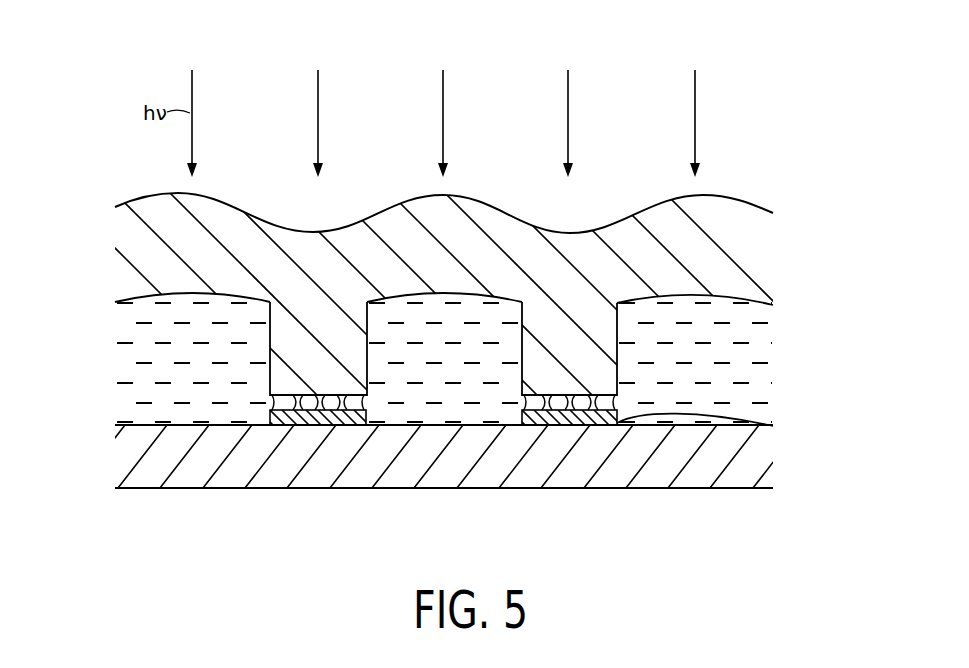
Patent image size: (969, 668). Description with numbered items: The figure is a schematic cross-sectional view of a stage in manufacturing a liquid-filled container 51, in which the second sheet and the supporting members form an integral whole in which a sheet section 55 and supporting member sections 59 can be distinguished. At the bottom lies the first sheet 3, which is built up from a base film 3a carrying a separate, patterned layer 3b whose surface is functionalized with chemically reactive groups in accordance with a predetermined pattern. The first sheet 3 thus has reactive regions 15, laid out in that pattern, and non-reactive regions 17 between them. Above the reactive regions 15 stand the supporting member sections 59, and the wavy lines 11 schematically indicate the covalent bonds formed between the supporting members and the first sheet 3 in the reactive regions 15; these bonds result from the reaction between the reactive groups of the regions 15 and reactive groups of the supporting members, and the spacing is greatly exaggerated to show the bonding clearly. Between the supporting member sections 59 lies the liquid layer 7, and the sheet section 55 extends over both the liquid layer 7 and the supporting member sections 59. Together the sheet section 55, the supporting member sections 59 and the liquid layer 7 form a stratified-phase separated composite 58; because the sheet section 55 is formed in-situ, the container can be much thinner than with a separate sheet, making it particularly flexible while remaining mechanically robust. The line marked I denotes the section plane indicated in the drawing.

The liquid-filled container 51 is at (80, 172).
The stratified-phase separated composite 58 is at (852, 213).
The sheet section 55 is at (763, 237).
The supporting member sections 59 is at (587, 308).
The liquid layer 7 is at (762, 323).
The wavy lines 11 is at (272, 402).
The reactive regions 15 is at (307, 425).
The non-reactive regions 17 is at (440, 428).
The first sheet 3 is at (850, 413).
The base film 3a is at (763, 478).
The patterned layer 3b is at (773, 426).
The section line I is at (818, 332).